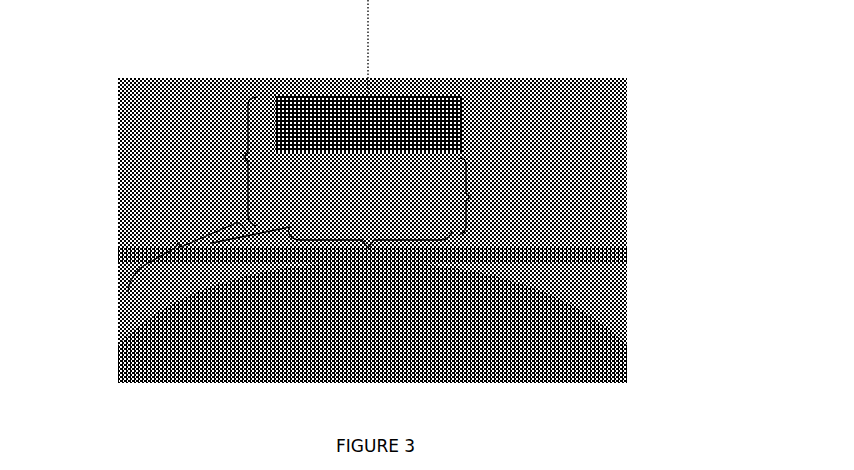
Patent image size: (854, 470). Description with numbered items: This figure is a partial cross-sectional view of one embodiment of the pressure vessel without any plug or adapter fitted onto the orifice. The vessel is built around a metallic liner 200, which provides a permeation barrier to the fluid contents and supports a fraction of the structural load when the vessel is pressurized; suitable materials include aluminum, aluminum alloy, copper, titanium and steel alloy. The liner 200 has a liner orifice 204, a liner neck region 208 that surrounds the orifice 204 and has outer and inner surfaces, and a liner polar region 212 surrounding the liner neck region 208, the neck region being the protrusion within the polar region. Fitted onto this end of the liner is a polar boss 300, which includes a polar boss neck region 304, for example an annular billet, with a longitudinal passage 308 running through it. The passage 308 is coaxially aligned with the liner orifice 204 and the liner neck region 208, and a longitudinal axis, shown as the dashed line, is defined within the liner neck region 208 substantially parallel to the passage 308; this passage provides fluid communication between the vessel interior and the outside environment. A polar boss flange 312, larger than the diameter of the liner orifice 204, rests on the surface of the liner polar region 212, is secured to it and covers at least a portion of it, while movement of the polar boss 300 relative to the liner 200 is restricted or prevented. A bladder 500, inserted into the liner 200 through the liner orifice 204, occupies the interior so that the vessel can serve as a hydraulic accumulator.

The metallic liner 200 is at (610, 357).
The liner orifice 204 is at (366, 258).
The liner neck region 208 is at (478, 197).
The liner polar region 212 is at (170, 240).
The polar boss 300 is at (476, 128).
The polar boss neck region 304 is at (232, 157).
The passage 308 is at (322, 117).
The polar boss flange 312 is at (243, 237).
The bladder 500 is at (478, 297).